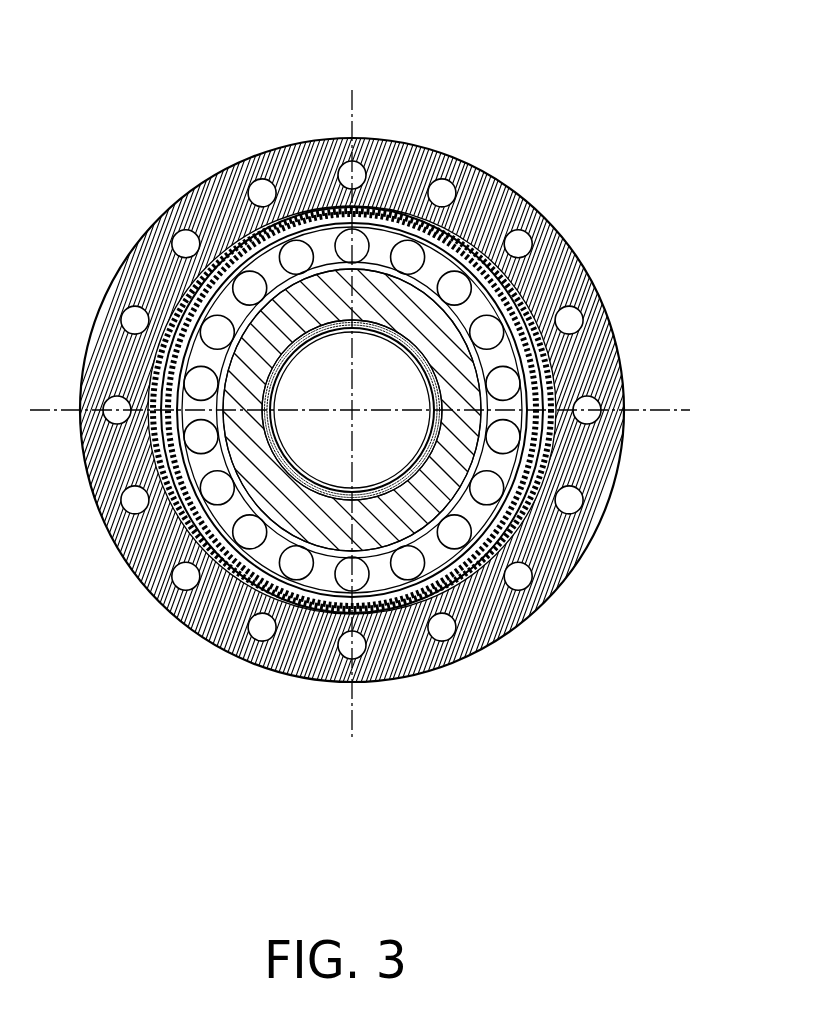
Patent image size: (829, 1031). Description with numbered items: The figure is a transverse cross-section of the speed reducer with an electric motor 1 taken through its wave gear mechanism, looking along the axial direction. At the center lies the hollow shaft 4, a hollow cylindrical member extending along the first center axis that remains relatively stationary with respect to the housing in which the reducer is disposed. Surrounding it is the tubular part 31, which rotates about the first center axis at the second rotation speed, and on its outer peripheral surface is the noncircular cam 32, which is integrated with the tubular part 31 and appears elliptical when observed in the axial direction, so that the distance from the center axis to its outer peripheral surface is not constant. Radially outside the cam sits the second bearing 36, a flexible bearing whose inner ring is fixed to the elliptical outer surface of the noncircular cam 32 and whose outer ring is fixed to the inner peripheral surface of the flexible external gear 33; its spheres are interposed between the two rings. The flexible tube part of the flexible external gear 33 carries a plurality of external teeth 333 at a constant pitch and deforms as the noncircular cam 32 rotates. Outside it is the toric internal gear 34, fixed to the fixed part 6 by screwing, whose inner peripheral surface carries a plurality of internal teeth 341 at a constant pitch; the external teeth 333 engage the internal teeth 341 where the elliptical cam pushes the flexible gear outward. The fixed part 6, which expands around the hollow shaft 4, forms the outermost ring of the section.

The speed reducer with an electric motor 1 is at (437, 75).
The fixed part 6 is at (485, 201).
The flexible external gear 33 is at (415, 414).
The external teeth 333 is at (556, 434).
The internal gear 34 is at (302, 397).
The internal teeth 341 is at (177, 307).
The second bearing 36 is at (455, 535).
The noncircular cam 32 is at (320, 536).
The tubular part 31 is at (387, 508).
The hollow shaft 4 is at (295, 479).